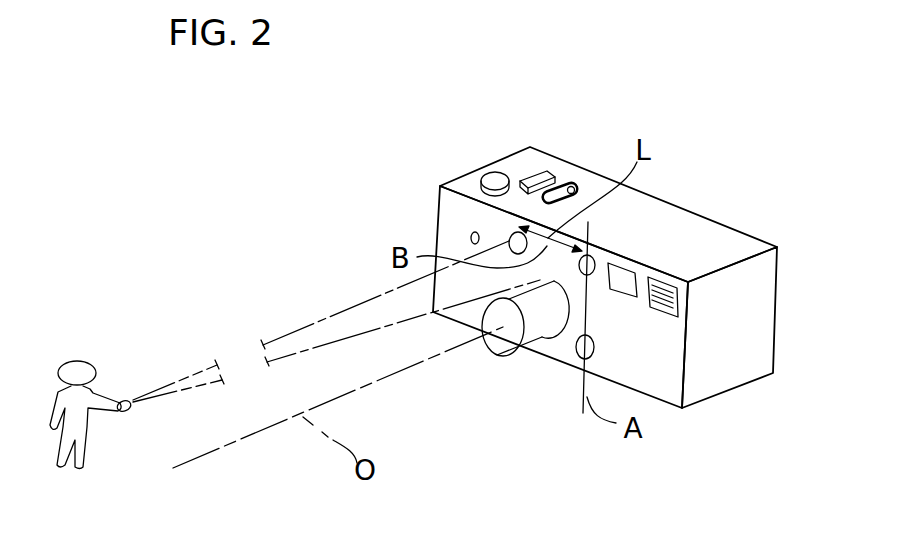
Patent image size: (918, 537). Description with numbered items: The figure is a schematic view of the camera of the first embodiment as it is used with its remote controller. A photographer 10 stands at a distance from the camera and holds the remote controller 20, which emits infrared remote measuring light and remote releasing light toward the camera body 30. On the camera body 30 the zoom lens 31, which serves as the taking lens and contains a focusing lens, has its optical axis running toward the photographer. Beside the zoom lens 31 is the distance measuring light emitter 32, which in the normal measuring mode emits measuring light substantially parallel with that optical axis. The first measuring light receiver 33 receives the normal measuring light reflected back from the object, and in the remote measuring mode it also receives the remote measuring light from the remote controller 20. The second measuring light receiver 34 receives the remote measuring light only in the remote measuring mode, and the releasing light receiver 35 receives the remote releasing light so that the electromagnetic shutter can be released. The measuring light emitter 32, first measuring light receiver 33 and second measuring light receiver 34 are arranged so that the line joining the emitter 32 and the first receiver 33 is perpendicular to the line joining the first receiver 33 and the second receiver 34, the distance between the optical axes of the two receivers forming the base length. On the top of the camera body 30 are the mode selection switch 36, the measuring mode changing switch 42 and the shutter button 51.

The user (operator) 10 is at (95, 357).
The remote controller 20 is at (127, 412).
The camera body 30 is at (728, 240).
The zoom lens 31 is at (507, 332).
The distance measuring light emitter 32 is at (581, 358).
The first measuring light receiver 33 is at (612, 280).
The second measuring light receiver 34 is at (514, 240).
The releasing light receiver 35 is at (468, 237).
The mode selection switch 36 is at (572, 185).
The measuring mode changing switch 42 is at (542, 170).
The shutter button 51 is at (492, 180).